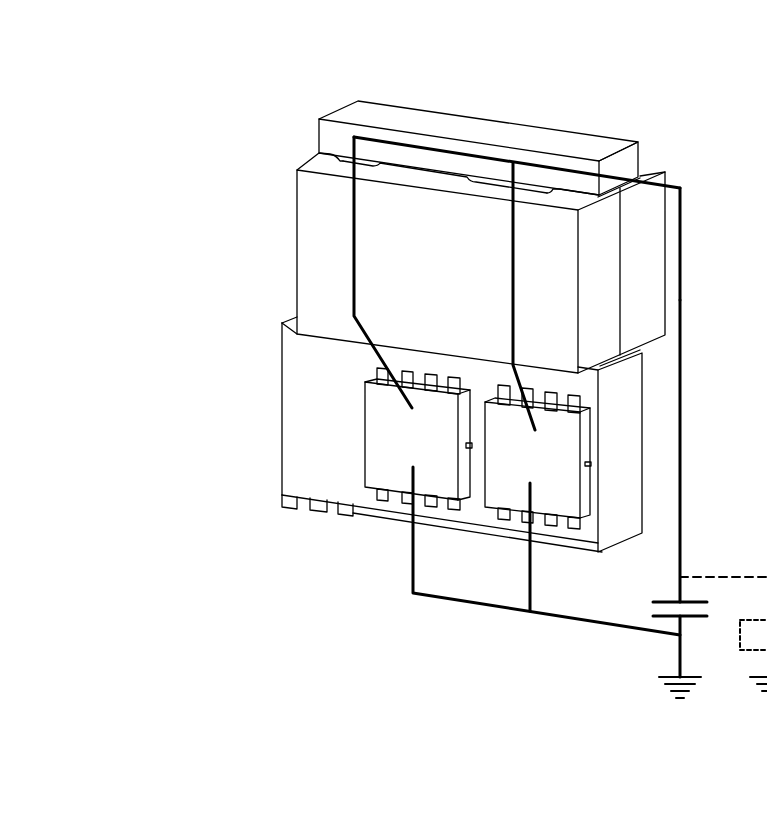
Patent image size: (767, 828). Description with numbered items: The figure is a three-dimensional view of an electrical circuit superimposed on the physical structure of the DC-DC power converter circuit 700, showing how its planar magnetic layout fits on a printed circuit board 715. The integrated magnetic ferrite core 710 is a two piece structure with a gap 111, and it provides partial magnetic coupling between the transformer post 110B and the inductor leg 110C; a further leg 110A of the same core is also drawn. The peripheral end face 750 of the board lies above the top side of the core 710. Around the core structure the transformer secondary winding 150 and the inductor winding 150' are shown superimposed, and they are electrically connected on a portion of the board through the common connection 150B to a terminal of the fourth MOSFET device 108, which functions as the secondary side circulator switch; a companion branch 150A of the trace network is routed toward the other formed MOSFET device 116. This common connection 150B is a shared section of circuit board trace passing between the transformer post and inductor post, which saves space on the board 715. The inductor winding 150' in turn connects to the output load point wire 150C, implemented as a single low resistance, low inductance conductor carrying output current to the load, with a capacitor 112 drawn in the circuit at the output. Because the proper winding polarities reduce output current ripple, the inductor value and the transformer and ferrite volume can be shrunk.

The DC-DC power converter circuit 700 is at (627, 58).
The peripheral end face of the PCB 750 is at (440, 113).
The integrated magnetic ferrite core 710 is at (304, 156).
The first recess 110A is at (327, 167).
The transformer post 110B is at (403, 180).
The inductor leg 110C is at (557, 203).
The gap 111 is at (619, 226).
The printed circuit board 715 is at (628, 480).
The MOSFET device 116 is at (430, 448).
The fourth MOSFET device 108 is at (550, 466).
The transformer secondary winding 150 is at (517, 126).
The first trace branch 150A is at (356, 275).
The common connection 150B is at (513, 295).
The inductor winding 150' is at (712, 244).
The output load point wire 150C is at (695, 286).
The capacitor 112 is at (710, 615).